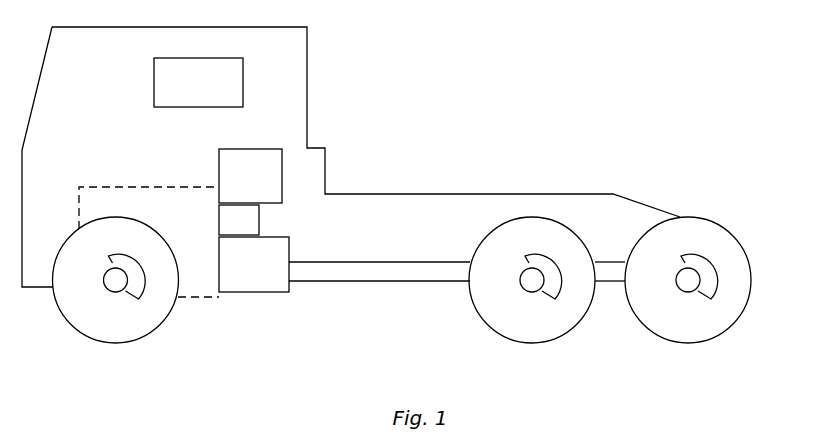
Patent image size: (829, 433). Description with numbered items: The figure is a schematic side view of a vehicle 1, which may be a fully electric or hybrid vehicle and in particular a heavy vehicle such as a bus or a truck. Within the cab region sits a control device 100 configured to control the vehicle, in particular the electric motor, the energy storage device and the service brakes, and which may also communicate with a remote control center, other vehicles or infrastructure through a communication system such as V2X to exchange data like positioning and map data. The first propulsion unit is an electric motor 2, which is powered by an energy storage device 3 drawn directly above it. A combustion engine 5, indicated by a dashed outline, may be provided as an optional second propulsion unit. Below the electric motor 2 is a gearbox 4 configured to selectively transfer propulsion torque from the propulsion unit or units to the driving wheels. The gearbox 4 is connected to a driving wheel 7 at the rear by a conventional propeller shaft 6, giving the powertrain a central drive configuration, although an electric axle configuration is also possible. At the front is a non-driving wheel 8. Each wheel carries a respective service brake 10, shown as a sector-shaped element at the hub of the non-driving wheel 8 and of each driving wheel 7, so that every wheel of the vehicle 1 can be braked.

The vehicle 1 is at (485, 80).
The control device 100 is at (198, 82).
The electric motor 2 is at (247, 217).
The energy storage device 3 is at (245, 158).
The gearbox 4 is at (267, 293).
The combustion engine 5 is at (170, 207).
The propeller shaft 6 is at (400, 272).
The driving wheel 7 is at (552, 327).
The non-driving wheel 8 is at (132, 329).
The service brake 10 is at (138, 281).